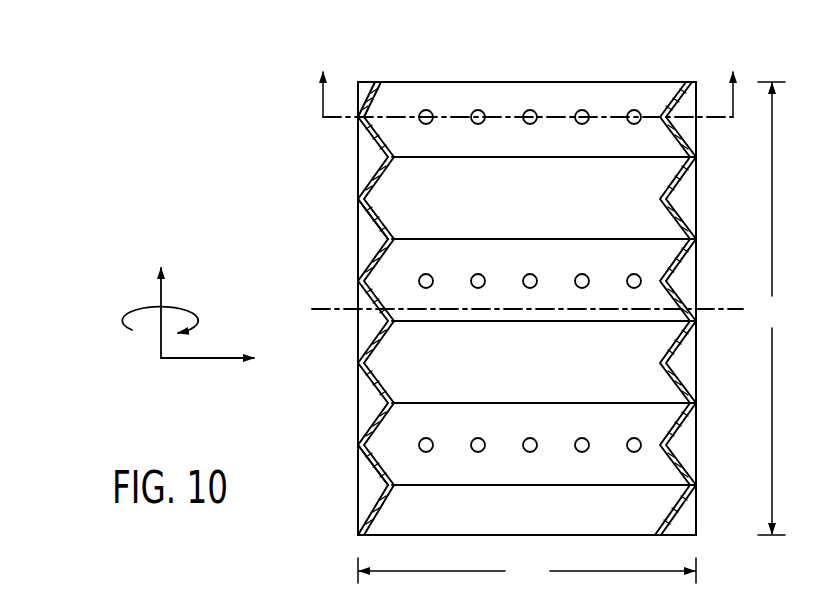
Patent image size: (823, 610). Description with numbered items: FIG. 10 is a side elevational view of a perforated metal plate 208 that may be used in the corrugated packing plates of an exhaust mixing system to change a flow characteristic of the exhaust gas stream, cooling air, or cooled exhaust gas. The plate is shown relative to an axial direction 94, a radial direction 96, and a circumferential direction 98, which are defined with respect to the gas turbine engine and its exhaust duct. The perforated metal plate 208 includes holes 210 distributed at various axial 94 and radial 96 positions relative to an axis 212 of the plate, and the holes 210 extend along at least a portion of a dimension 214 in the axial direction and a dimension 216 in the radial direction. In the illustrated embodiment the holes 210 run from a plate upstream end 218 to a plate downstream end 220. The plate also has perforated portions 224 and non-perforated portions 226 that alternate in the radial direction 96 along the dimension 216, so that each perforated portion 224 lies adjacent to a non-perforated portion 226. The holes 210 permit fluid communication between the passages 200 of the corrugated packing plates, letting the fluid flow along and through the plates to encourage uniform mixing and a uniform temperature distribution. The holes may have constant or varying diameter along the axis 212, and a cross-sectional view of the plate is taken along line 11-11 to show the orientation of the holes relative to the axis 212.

The perforated metal plate 208 is at (562, 57).
The passages 200 is at (370, 496).
The non-perforated portion 226 is at (420, 198).
The perforated portion 224 is at (405, 446).
The holes 210 is at (431, 275).
The axis 212 is at (330, 310).
The line 11- 11 is at (528, 77).
The plate upstream end 218 is at (357, 506).
The plate downstream end 220 is at (699, 515).
The dimension 214 is at (527, 572).
The dimension 216 is at (772, 308).
The axial direction or axis 94 is at (160, 338).
The radial direction or axis 96 is at (200, 358).
The circumferential direction or axis 98 is at (195, 305).